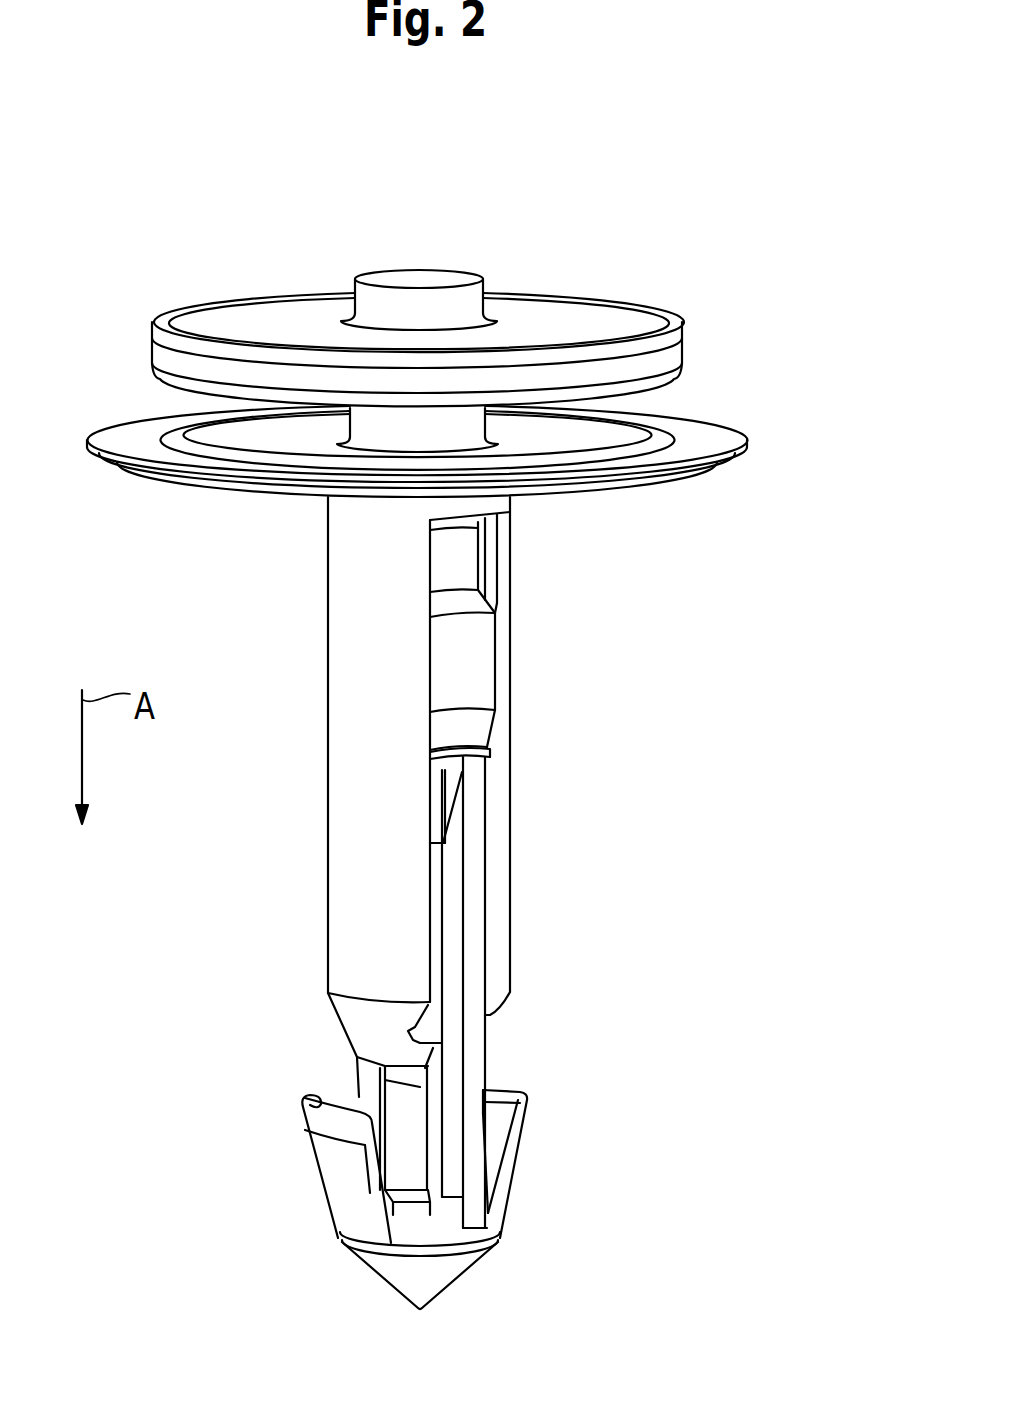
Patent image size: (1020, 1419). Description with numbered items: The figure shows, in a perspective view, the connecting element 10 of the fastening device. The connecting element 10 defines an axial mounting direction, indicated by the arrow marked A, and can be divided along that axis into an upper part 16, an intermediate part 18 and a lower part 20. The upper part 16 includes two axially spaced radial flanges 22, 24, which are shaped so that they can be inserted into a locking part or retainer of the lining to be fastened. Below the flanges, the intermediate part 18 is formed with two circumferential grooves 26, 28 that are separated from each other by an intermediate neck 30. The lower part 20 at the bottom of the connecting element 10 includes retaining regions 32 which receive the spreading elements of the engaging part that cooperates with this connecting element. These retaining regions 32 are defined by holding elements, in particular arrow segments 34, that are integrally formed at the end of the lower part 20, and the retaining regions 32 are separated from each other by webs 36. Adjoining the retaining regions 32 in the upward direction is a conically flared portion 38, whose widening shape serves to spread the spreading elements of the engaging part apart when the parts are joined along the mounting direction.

The connecting element 10 is at (597, 215).
The upper part 16 is at (825, 260).
The intermediate part 18 is at (825, 455).
The lower part 20 is at (825, 1087).
The radial flange 22 is at (238, 319).
The radial flange 24 is at (130, 435).
The circumferential groove 26 is at (467, 733).
The circumferential groove 28 is at (455, 555).
The intermediate neck 30 is at (475, 650).
The retaining regions 32 is at (355, 1095).
The arrow segments 34 is at (340, 1182).
The webs 36 is at (492, 1183).
The conically flared portion 38 is at (349, 1028).